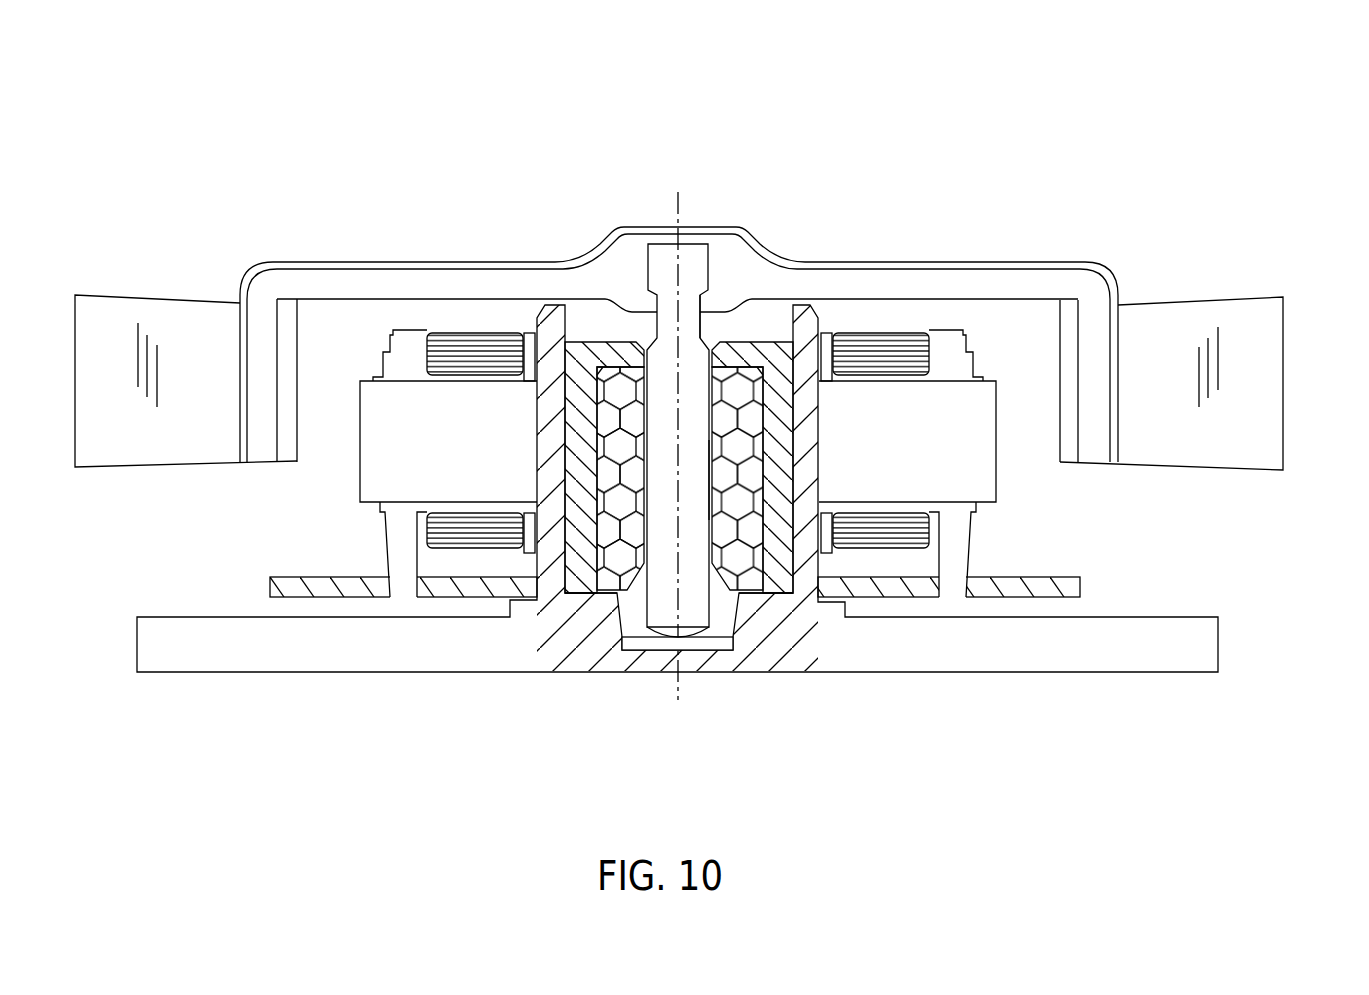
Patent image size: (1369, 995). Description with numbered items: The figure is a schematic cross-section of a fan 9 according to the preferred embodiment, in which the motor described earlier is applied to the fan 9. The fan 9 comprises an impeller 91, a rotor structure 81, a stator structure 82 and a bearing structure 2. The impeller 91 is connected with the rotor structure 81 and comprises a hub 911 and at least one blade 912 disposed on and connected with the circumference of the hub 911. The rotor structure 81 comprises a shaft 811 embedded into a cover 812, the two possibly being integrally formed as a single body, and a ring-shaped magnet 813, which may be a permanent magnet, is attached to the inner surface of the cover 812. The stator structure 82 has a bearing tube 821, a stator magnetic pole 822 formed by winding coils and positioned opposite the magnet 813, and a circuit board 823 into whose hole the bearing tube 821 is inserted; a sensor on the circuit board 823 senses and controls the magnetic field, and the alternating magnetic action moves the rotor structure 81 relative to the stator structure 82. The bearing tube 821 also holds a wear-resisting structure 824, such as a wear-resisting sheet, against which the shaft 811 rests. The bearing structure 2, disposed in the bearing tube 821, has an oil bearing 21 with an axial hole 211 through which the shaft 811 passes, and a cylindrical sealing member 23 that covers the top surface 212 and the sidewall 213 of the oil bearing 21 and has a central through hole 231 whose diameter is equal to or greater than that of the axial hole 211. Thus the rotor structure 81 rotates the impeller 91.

The fan 9 is at (200, 119).
The impeller 91 is at (338, 177).
The hub 911 is at (333, 267).
The blade 912 is at (207, 313).
The bearing structure 2 is at (582, 179).
The oil bearing 21 is at (622, 370).
The axial hole 211 is at (709, 380).
The top surface 212 is at (707, 335).
The sidewall 213 is at (710, 477).
The cylindrical sealing member 23 is at (585, 347).
The through hole 231 is at (643, 345).
The rotor structure 81 is at (767, 138).
The shaft 811 is at (690, 252).
The cover 812 is at (770, 275).
The magnet 813 is at (1070, 332).
The stator structure 82 is at (967, 762).
The bearing tube 821 is at (792, 672).
The stator magnetic pole 822 is at (878, 543).
The circuit board 823 is at (1005, 593).
The wear-resisting structure 824 is at (707, 647).